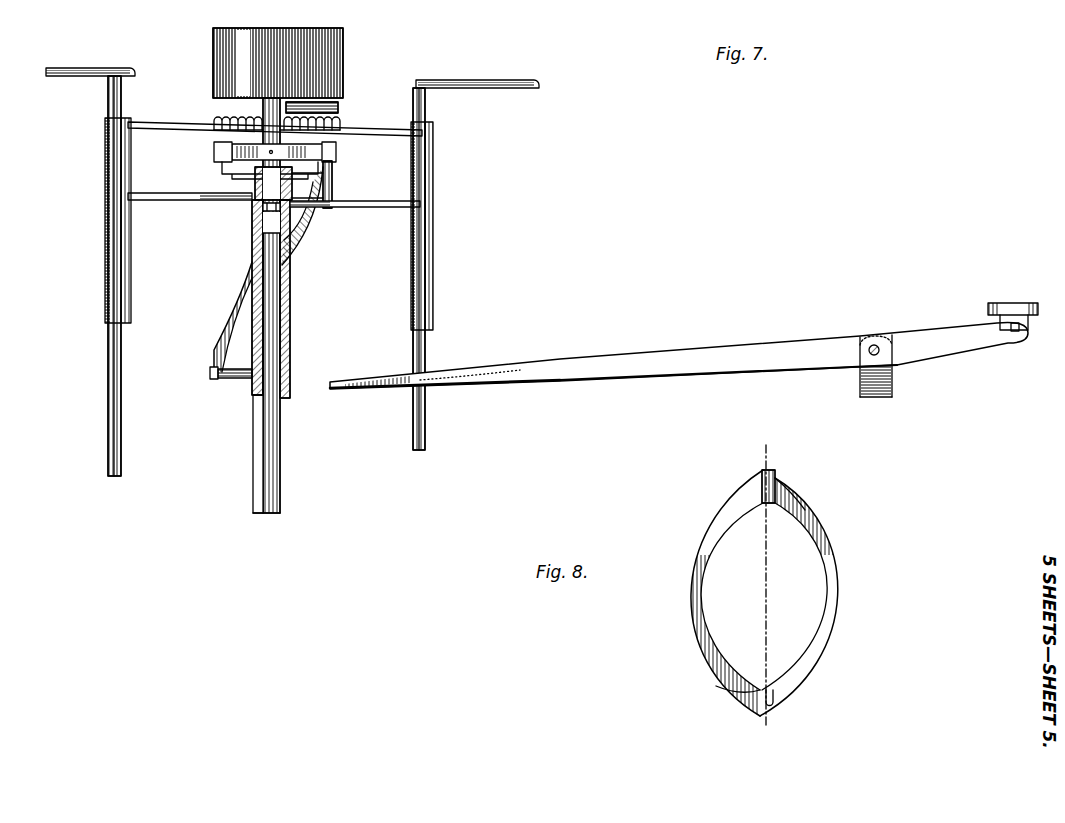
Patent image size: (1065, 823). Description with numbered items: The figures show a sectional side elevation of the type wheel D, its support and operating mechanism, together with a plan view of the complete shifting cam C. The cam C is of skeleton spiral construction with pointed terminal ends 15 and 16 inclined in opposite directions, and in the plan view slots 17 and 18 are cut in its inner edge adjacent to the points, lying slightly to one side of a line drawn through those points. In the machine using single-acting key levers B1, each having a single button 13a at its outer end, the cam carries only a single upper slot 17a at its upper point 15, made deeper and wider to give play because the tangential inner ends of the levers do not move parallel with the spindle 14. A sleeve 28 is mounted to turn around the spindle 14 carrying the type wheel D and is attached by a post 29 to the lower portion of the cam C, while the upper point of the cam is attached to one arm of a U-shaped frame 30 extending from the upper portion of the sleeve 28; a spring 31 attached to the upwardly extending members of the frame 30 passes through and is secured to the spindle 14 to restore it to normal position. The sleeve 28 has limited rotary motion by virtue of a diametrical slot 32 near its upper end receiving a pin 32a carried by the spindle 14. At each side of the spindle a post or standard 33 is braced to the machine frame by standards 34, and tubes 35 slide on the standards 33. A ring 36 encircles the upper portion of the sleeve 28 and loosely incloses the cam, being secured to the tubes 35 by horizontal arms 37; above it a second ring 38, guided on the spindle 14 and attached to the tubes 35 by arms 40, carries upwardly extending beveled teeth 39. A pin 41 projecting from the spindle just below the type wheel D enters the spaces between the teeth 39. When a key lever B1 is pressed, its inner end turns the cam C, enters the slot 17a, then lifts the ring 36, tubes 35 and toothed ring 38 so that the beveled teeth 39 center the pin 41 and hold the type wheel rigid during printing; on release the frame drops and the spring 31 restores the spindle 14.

In FIG. 7, the type wheel D is at (338, 82).
In FIG. 7, the spindle 14 is at (281, 318).
In FIG. 7, the pin 41 is at (340, 107).
In FIG. 7, the second ring 38 is at (214, 124).
In FIG. 7, the teeth 39 is at (341, 124).
In FIG. 7, the arms 40 is at (162, 129).
In FIG. 7, the spring 31 is at (214, 150).
In FIG. 7, the U-shaped frame 30 is at (308, 172).
In FIG. 7, the diametrical slot 32 is at (260, 208).
In FIG. 7, the sleeve 28 is at (291, 356).
In FIG. 7, the upper terminal end 15 is at (333, 184).
In FIG. 8, the upper terminal end 15 is at (770, 490).
In FIG. 7, the upper slot 17a is at (333, 198).
In FIG. 7, the pin 32a is at (281, 212).
In FIG. 7, the horizontal arms 37 is at (170, 193).
In FIG. 7, the ring 36 is at (338, 208).
In FIG. 7, the shifting cam C is at (233, 296).
In FIG. 8, the shifting cam C is at (777, 585).
In FIG. 7, the lower terminal end 16 is at (210, 375).
In FIG. 8, the lower terminal end 16 is at (772, 712).
In FIG. 7, the post 29 is at (234, 380).
In FIG. 7, the standards 34 is at (95, 60).
In FIG. 7, the post or standard 33 is at (107, 356).
In FIG. 7, the tubes 35 is at (105, 229).
In FIG. 7, the single-acting key lever B1 is at (681, 351).
In FIG. 7, the button 13a is at (1016, 295).
In FIG. 8, the slot 17 is at (780, 498).
In FIG. 8, the slot 18 is at (760, 690).